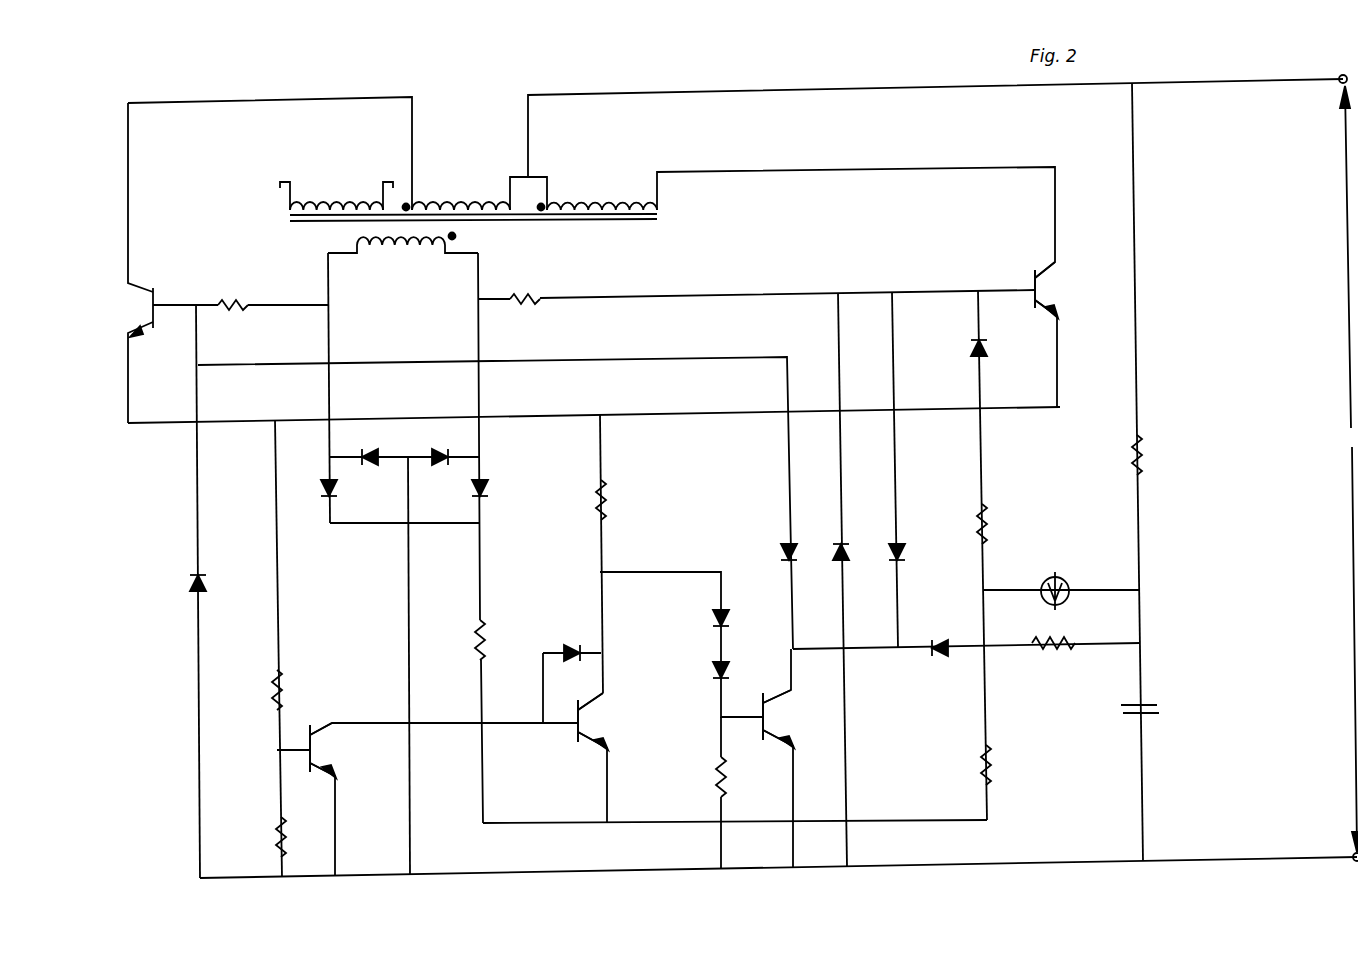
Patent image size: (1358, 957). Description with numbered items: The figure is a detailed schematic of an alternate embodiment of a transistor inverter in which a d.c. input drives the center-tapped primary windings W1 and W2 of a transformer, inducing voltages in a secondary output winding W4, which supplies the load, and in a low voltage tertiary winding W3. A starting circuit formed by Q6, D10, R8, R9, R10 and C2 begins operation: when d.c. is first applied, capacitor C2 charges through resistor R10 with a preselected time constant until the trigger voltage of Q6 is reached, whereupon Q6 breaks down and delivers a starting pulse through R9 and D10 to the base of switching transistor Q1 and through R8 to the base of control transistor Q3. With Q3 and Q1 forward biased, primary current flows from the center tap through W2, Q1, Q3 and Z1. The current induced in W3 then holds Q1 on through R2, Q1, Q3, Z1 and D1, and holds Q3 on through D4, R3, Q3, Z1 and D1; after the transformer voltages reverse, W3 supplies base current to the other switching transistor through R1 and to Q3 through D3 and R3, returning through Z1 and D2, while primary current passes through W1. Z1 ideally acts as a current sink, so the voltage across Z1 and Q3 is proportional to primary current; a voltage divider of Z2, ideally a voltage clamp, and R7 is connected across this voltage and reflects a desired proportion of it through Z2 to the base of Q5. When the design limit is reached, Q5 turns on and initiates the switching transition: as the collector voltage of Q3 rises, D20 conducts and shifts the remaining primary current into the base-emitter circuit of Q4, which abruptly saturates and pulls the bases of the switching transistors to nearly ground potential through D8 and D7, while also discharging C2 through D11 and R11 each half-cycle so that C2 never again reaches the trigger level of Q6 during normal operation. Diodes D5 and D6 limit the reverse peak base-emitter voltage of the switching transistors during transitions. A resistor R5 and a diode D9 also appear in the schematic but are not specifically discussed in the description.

The primary winding W1 is at (461, 193).
The primary winding W2 is at (602, 193).
The low voltage tertiary winding W3 is at (401, 254).
The secondary output winding W4 is at (336, 185).
The resistor R1 is at (233, 296).
The resistor R2 is at (525, 289).
The resistor R3 is at (466, 640).
The resistor R5 is at (735, 777).
The resistor R7 is at (268, 837).
The resistor R8 is at (999, 765).
The resistor R9 is at (995, 524).
The resistor R10 is at (1156, 455).
The resistor R11 is at (1053, 654).
The current sink element Z1 is at (613, 500).
The voltage clamp element Z2 is at (291, 690).
The diode D1 is at (370, 469).
The diode D2 is at (439, 469).
The diode D3 is at (315, 489).
The diode D4 is at (495, 489).
The diode D5 is at (184, 584).
The diode D6 is at (830, 542).
The diode D7 is at (780, 542).
The diode D8 is at (731, 592).
The diode D9 is at (705, 620).
The diode D10 is at (999, 350).
The diode D11 is at (944, 636).
The diode D20 is at (701, 672).
The capacitor C2 is at (1146, 698).
The switching transistor Q1 is at (1051, 289).
The control transistor Q3 is at (598, 720).
The transistor Q4 is at (785, 718).
The transistor Q5 is at (327, 749).
The trigger device Q6 is at (1068, 587).